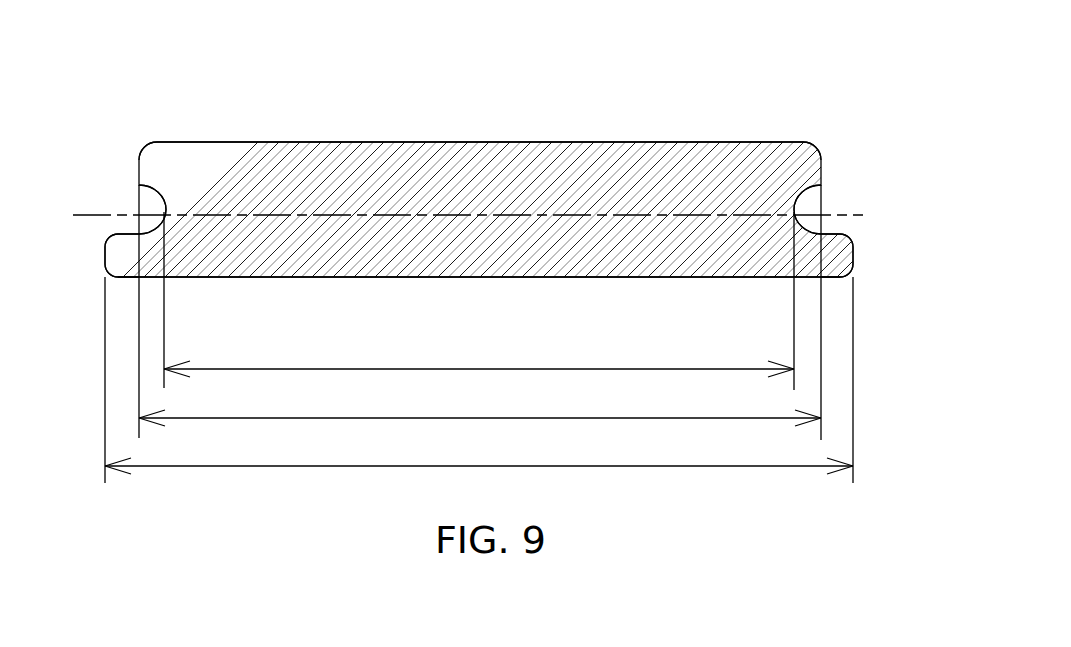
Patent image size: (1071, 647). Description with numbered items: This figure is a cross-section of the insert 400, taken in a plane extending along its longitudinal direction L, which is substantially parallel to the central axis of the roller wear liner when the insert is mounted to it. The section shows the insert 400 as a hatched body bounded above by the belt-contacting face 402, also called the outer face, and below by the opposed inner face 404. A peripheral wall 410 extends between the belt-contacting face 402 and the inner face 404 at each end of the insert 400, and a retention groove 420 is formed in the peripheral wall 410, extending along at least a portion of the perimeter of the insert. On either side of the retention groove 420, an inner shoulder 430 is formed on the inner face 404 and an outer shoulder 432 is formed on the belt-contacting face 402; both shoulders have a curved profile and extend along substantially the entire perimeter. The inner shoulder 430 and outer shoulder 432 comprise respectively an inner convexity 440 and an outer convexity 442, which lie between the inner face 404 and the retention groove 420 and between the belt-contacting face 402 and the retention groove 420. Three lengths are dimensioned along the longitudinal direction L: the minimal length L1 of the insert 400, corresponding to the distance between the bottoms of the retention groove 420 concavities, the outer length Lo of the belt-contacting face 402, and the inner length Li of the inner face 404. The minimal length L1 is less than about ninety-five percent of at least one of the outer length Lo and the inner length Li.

The insert 400 is at (695, 93).
The belt-contacting face 402 is at (525, 141).
The inner face 404 is at (645, 278).
The peripheral wall 410 is at (817, 189).
The retention groove 420 is at (827, 225).
The inner shoulder 430 is at (118, 256).
The inner convexity 440 is at (838, 255).
The outer shoulder 432 is at (156, 163).
The outer convexity 442 is at (802, 163).
The longitudinal direction L is at (446, 213).
The minimal length L1 is at (520, 370).
The outer length Lo is at (462, 418).
The inner length Li is at (337, 467).